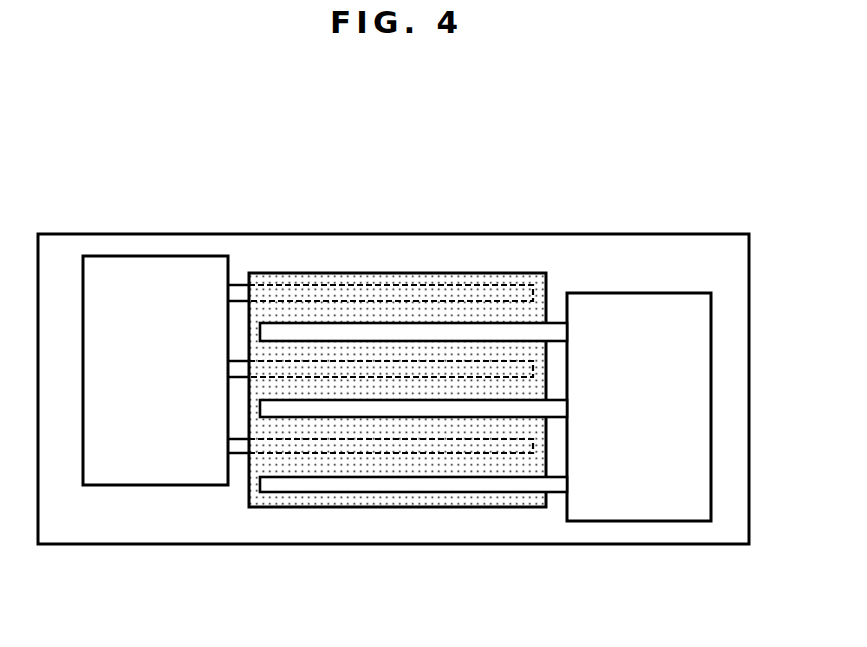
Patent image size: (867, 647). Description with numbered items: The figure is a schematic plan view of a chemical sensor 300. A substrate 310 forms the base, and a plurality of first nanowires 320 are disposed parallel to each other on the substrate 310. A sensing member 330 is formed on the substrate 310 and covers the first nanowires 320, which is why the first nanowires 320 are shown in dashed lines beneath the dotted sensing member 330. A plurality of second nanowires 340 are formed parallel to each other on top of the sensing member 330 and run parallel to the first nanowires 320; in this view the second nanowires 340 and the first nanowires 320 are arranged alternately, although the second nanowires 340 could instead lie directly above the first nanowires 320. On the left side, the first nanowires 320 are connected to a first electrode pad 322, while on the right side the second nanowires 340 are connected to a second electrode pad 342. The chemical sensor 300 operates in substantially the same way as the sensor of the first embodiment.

The chemical sensor 300 is at (195, 146).
The substrate 310 is at (610, 233).
The first nanowires 320 is at (415, 284).
The first electrode pad 322 is at (149, 475).
The sensing member 330 is at (347, 498).
The second nanowires 340 is at (434, 487).
The second electrode pad 342 is at (630, 512).